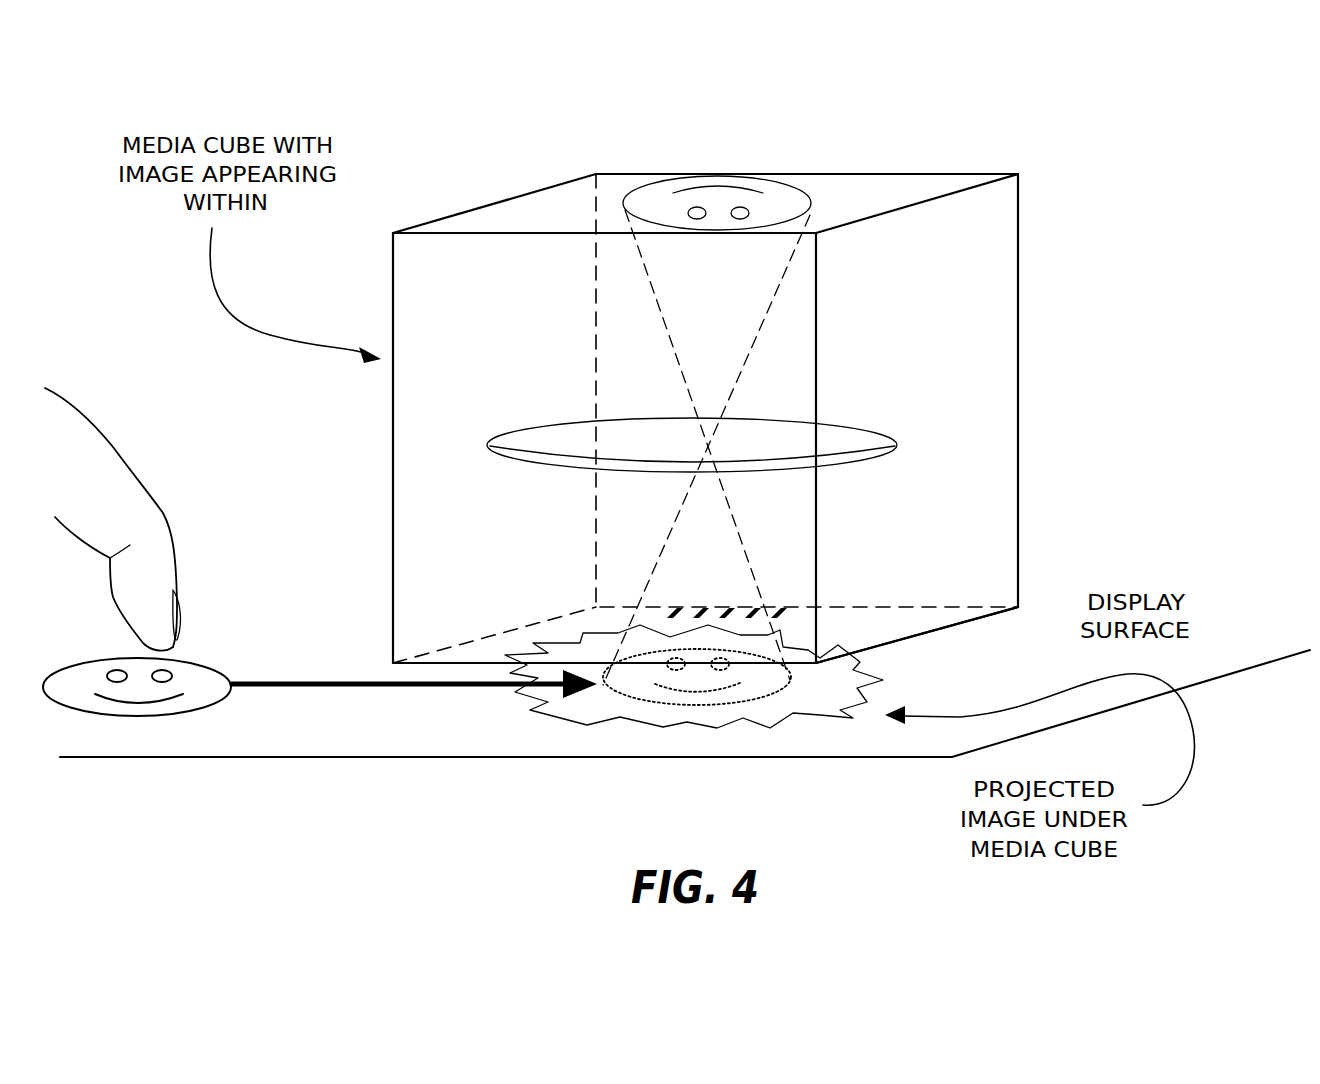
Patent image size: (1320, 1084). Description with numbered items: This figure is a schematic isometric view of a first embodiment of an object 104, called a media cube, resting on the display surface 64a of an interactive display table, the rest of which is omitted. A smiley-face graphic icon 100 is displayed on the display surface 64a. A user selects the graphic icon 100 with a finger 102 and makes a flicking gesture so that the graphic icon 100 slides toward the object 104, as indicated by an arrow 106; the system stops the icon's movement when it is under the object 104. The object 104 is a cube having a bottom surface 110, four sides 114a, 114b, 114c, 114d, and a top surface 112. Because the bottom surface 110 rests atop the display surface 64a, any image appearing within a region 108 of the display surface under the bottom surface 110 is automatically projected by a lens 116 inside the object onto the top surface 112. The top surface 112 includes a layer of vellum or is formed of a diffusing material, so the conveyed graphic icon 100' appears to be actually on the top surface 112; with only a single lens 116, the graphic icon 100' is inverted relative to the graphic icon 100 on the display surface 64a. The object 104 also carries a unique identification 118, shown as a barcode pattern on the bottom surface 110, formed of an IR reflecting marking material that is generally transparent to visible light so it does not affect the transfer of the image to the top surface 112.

The display surface 64a is at (390, 753).
The graphic icon 100 is at (444, 713).
The graphic icon 100' is at (745, 186).
The finger 102 is at (170, 533).
The object 104 is at (736, 399).
The arrow 106 is at (372, 682).
The region 108 is at (880, 700).
The bottom surface 110 is at (917, 620).
The top surface 112 is at (907, 192).
The side 114a is at (1013, 512).
The side 114b is at (425, 524).
The side 114c is at (503, 277).
The side 114d is at (952, 297).
The lens 116 is at (893, 443).
The unique identification (ID) 118 is at (777, 610).